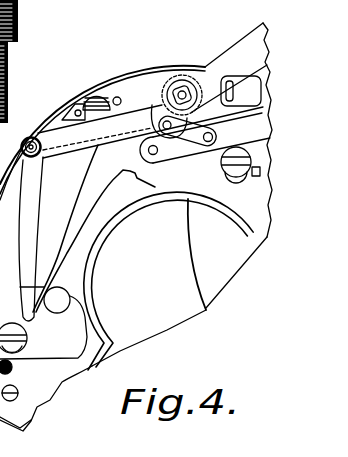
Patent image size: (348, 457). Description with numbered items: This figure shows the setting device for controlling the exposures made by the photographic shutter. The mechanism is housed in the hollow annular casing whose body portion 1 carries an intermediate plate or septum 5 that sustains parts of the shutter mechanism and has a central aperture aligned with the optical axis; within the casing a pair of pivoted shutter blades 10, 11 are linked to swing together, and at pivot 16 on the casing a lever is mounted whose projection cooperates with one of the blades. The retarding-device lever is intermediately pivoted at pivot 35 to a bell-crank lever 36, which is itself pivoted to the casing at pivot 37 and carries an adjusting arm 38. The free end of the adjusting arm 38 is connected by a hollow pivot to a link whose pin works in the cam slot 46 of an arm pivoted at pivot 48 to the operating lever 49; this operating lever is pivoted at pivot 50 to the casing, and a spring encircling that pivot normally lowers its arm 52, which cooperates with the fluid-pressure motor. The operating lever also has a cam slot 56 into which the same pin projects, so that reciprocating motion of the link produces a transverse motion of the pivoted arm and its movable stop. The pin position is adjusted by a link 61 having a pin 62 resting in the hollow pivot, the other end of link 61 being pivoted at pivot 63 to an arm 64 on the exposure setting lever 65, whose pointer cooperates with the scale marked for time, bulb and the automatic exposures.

The body portion 1 is at (258, 130).
The septum 5 is at (144, 270).
The shutter blade 10 is at (180, 314).
The shutter blade 11 is at (226, 294).
The lever pivot 16 is at (117, 97).
The pivot 35 is at (60, 298).
The bell-crank lever 36 is at (43, 323).
The pivot 37 is at (21, 353).
The adjusting arm 38 is at (10, 218).
The cam slot 46 is at (241, 91).
The pivot 48 is at (147, 151).
The operating lever 49 is at (203, 150).
The pivot 50 is at (215, 177).
The arm 52 is at (56, 254).
The cam slot 56 is at (238, 174).
The link 61 is at (82, 146).
The pin 62 is at (42, 133).
The pivot 63 is at (165, 122).
The arm 64 is at (169, 140).
The exposure setting lever 65 is at (242, 52).